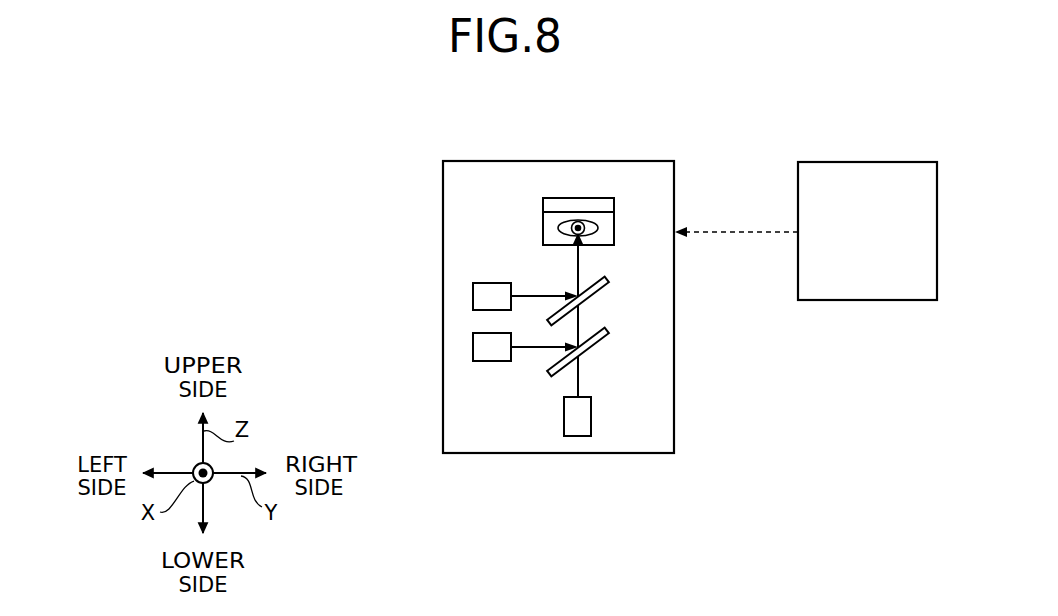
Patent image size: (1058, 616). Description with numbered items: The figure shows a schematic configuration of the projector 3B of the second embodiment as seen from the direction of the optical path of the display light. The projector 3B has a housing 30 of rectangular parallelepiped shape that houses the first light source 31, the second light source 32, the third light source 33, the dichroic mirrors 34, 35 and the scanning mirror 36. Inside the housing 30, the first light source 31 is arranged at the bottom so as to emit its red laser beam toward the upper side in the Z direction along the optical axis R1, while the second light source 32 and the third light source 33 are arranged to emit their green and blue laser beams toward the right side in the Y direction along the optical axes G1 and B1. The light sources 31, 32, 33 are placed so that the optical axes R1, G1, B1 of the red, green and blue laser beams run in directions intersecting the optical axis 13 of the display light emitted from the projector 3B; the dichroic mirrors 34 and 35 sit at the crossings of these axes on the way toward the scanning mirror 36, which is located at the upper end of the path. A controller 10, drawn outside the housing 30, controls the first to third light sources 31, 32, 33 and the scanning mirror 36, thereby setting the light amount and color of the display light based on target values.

The projector 3B is at (557, 150).
The housing 30 is at (625, 160).
The scanning mirror 36 is at (543, 227).
The optical axis 13 is at (581, 226).
The third light source 33 is at (473, 291).
The optical axis of blue laser beam B1 is at (528, 299).
The second light source 32 is at (473, 343).
The optical axis of green laser beam G1 is at (528, 350).
The dichroic mirror 35 is at (600, 279).
The dichroic mirror 34 is at (600, 330).
The optical axis of red laser beam R1 is at (578, 378).
The first light source 31 is at (564, 413).
The controller 10 is at (836, 162).